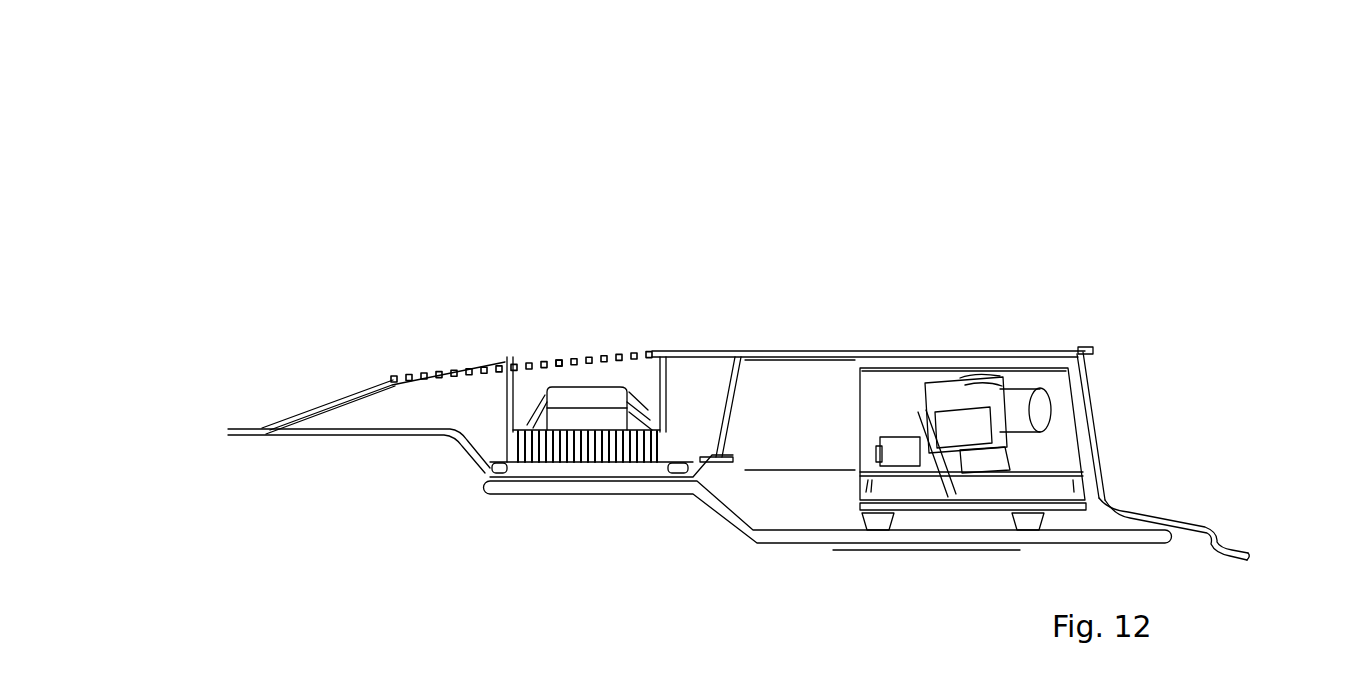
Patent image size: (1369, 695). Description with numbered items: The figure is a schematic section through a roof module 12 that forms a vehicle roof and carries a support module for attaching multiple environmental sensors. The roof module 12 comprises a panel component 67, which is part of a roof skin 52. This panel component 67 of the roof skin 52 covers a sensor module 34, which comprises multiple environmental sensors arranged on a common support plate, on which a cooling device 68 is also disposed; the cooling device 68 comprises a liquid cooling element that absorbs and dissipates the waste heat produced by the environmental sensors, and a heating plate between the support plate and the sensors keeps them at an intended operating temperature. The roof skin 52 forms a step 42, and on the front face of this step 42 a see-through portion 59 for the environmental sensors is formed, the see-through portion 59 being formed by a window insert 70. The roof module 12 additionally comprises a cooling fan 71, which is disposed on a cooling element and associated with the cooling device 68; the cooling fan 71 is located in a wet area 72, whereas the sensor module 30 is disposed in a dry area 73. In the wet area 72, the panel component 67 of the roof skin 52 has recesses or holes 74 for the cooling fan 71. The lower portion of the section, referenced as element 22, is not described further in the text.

The roof module 12 is at (1063, 125).
The floor channel 22 is at (780, 537).
The sensor module 30 is at (944, 502).
The sensor module 34 is at (955, 413).
The step 42 is at (1092, 348).
The roof skin 52 is at (884, 350).
The see-through portion 59 is at (1095, 407).
The panel component 67 is at (766, 352).
The cooling device 68 is at (1063, 447).
The window insert 70 is at (1108, 483).
The cooling fan 71 is at (597, 403).
The wet area 72 is at (470, 419).
The dry area 73 is at (807, 476).
The recesses or holes 74 is at (567, 348).